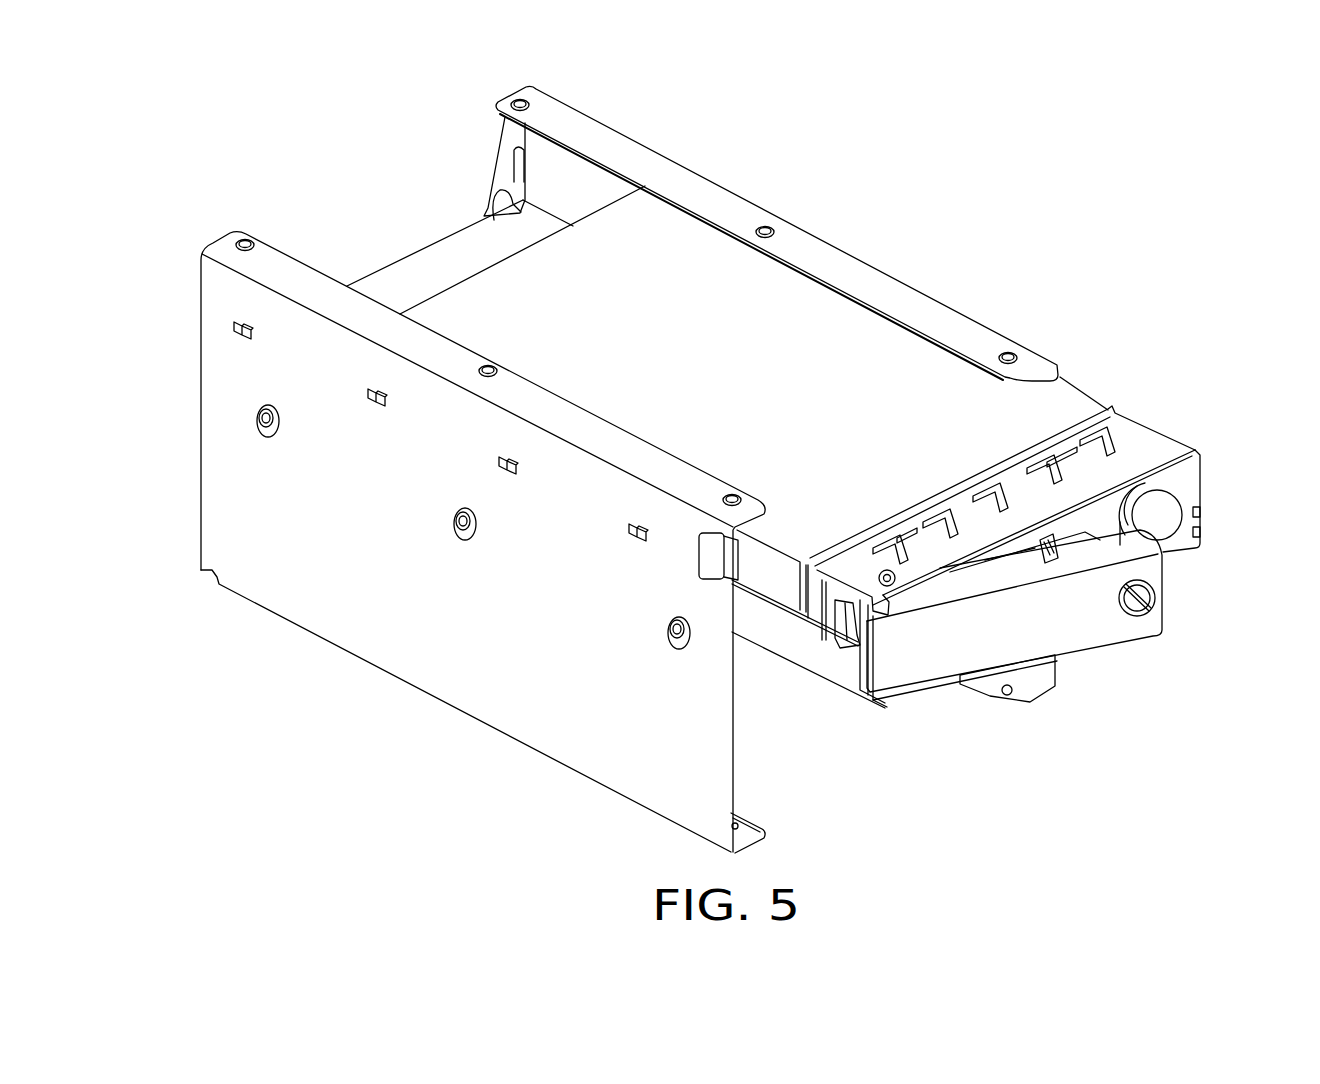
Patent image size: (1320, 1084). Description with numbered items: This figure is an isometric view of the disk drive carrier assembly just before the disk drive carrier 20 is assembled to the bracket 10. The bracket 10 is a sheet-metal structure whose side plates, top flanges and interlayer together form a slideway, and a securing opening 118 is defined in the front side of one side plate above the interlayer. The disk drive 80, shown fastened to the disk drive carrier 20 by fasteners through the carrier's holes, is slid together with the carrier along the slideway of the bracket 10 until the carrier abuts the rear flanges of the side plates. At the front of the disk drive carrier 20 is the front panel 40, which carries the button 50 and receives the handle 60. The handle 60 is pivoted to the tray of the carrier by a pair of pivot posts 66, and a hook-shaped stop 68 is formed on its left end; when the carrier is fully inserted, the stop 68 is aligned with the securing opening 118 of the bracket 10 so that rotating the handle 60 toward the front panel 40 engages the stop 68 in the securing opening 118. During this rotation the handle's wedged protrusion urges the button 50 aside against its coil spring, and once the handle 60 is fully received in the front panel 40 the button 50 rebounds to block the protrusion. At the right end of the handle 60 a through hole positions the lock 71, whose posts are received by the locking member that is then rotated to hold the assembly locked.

The bracket 10 is at (452, 680).
The securing opening 118 is at (703, 552).
The disk drive 80 is at (912, 350).
The disk drive carrier 20 is at (1143, 450).
The front panel 40 is at (1180, 550).
The button 50 is at (1157, 520).
The handle 60 is at (1073, 633).
The pivot post 66 is at (893, 585).
The stop 68 is at (843, 623).
The lock 71 is at (1131, 612).